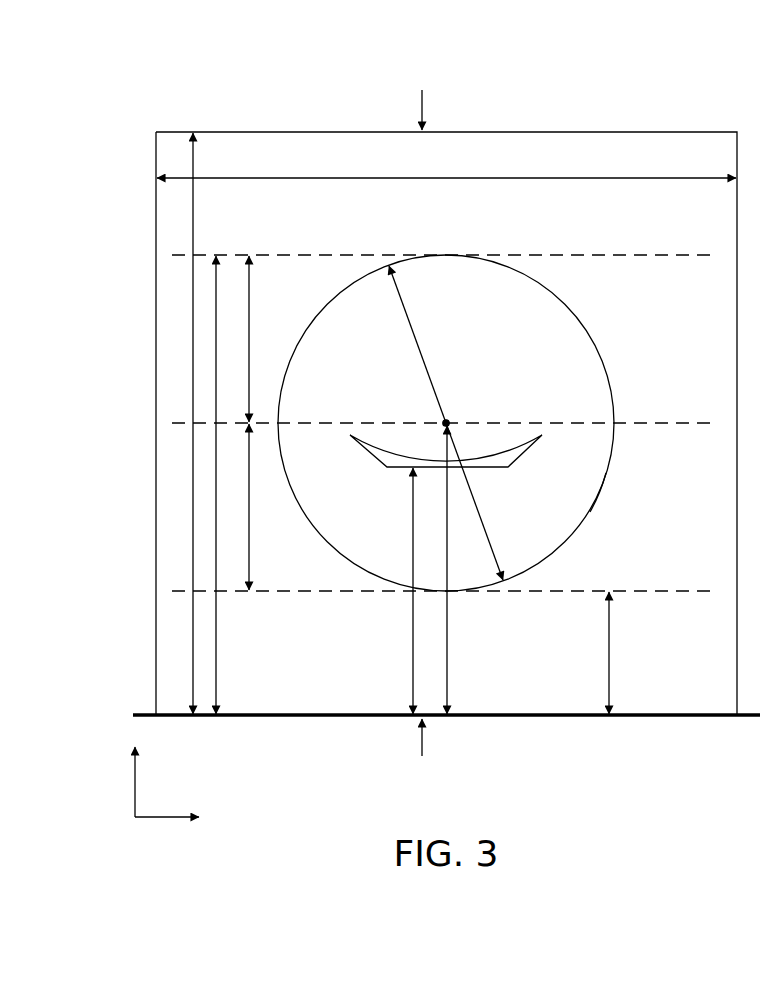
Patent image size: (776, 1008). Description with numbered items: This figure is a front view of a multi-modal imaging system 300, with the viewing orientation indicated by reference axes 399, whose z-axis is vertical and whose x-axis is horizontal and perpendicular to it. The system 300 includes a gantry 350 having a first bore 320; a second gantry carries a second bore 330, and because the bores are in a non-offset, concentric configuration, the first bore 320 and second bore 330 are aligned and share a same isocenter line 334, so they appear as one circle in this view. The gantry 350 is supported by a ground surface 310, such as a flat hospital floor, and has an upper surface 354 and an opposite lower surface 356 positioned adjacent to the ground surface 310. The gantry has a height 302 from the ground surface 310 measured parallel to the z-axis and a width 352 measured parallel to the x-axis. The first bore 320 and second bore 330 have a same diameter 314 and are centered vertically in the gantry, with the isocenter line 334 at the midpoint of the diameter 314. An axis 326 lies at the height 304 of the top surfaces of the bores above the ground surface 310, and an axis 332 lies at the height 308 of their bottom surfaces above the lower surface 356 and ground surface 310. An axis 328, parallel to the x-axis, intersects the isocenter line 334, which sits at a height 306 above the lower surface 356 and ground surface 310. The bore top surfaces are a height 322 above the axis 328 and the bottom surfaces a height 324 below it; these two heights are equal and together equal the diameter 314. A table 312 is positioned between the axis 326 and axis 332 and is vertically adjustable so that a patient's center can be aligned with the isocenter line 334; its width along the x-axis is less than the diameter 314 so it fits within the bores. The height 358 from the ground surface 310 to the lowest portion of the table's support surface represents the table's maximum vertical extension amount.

The multi-modal imaging system 300 is at (574, 110).
The height 302 is at (193, 238).
The height 304 is at (216, 672).
The height 306 is at (447, 668).
The height 308 is at (609, 648).
The ground surface 310 is at (145, 713).
The table 312 is at (373, 458).
The diameter 314 is at (415, 333).
The first bore 320 is at (588, 515).
The height 322 is at (249, 312).
The height 324 is at (249, 556).
The axis 326 is at (619, 255).
The axis 328 is at (618, 423).
The second bore 330 is at (607, 472).
The axis 332 is at (688, 591).
The isocenter line 334 is at (435, 414).
The gantry 350 is at (478, 131).
The width 352 is at (288, 177).
The upper surface 354 is at (422, 99).
The lower surface 356 is at (422, 750).
The height 358 is at (413, 668).
The reference axes 399 is at (174, 766).